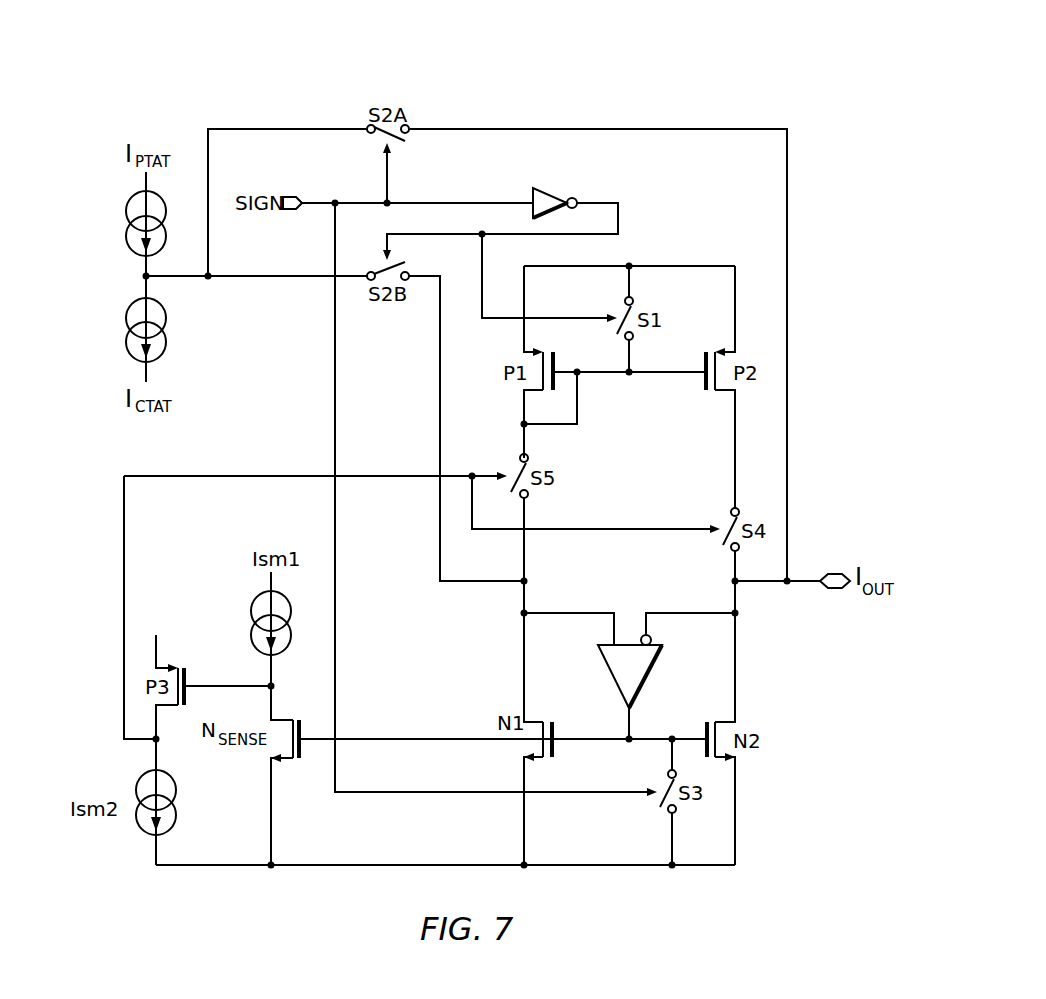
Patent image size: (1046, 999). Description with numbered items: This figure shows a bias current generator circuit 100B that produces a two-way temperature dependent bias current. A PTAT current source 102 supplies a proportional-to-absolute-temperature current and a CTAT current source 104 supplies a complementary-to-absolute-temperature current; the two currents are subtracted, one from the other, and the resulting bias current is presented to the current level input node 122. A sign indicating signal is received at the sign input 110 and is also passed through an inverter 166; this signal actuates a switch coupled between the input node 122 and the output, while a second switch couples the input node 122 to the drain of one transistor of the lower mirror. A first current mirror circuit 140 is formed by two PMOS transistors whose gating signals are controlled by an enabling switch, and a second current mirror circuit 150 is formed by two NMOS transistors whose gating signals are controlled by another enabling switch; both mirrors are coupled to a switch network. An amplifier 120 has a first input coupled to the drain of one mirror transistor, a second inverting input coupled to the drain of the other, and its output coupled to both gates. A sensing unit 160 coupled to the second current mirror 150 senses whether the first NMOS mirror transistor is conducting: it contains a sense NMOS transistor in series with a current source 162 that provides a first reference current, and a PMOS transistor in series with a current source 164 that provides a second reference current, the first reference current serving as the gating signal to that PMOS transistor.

The bias current generator circuit 100B is at (588, 60).
The PTAT current source 102 is at (131, 208).
The CTAT current source 104 is at (125, 343).
The sign input terminal 110 is at (289, 197).
The amplifier 120 is at (652, 676).
The current level input node 122 is at (211, 272).
The first current mirror circuit 140 is at (822, 316).
The second current mirror circuit 150 is at (794, 712).
The sensing unit 160 is at (210, 899).
The current source 162 is at (252, 611).
The current source 164 is at (135, 813).
The inverter 166 is at (548, 188).